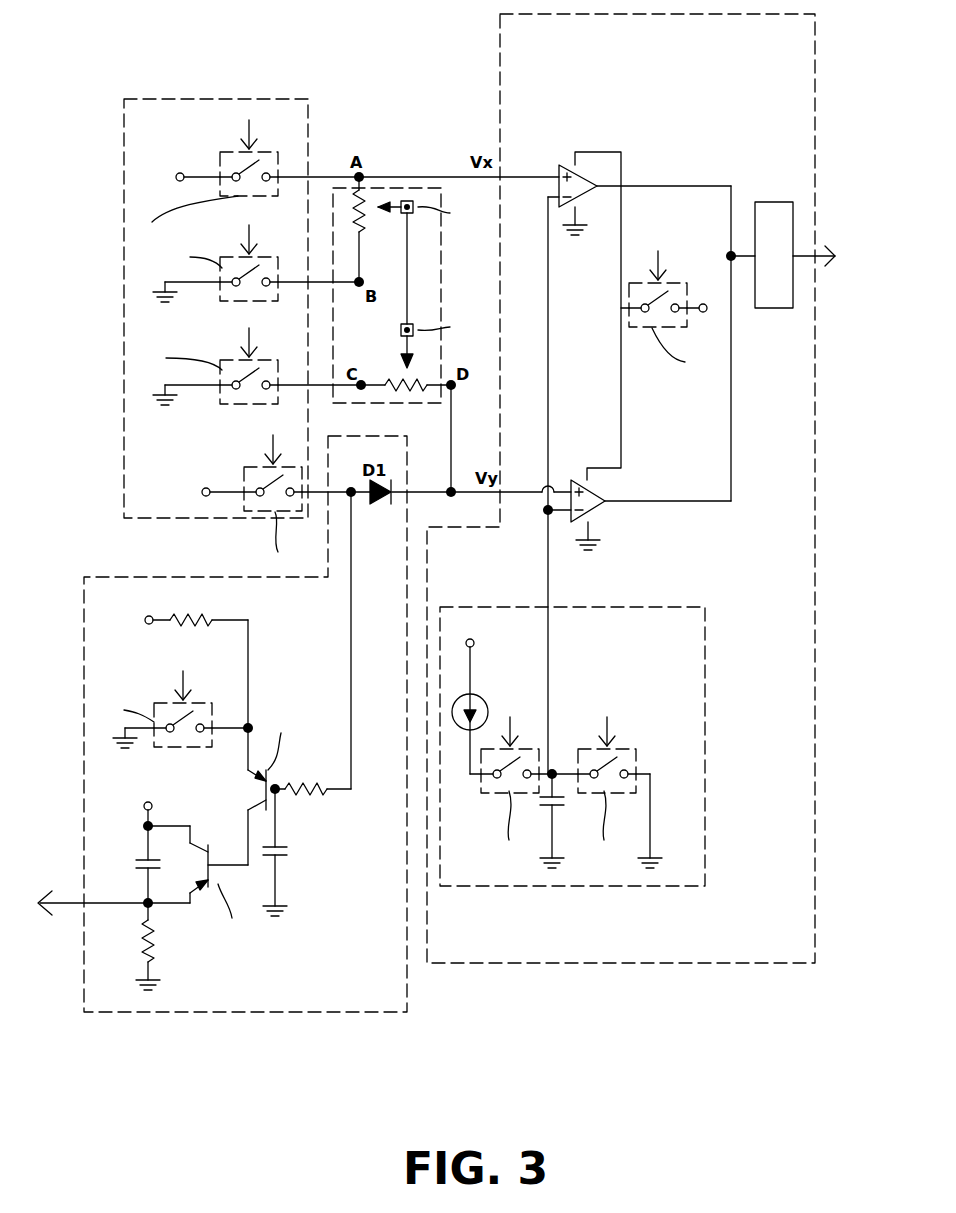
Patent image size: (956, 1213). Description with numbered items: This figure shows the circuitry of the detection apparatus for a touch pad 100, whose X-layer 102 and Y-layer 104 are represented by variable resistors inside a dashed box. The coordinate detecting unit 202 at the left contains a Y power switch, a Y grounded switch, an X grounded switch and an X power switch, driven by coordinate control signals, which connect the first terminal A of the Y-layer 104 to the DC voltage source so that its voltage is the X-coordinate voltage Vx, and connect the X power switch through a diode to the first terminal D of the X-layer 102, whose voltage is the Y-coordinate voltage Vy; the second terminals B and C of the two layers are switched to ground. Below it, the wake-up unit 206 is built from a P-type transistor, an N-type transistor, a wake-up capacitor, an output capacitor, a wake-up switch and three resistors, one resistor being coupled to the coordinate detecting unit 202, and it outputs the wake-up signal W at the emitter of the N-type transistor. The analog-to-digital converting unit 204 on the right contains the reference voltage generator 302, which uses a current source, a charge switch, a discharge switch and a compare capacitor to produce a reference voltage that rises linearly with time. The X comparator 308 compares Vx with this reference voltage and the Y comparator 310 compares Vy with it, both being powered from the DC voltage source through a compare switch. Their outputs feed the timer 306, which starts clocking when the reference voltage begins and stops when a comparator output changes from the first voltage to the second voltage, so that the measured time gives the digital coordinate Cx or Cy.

The touch pad 100 is at (396, 188).
The X-layer 102 is at (397, 378).
The Y-layer 104 is at (369, 222).
The coordinate detecting unit 202 is at (124, 215).
The analog-to-digital converting unit 204 is at (815, 818).
The wake-up unit 206 is at (84, 705).
The reference voltage generator 302 is at (705, 702).
The timer 306 is at (770, 202).
The X comparator 308 is at (586, 197).
The Y comparator 310 is at (585, 470).